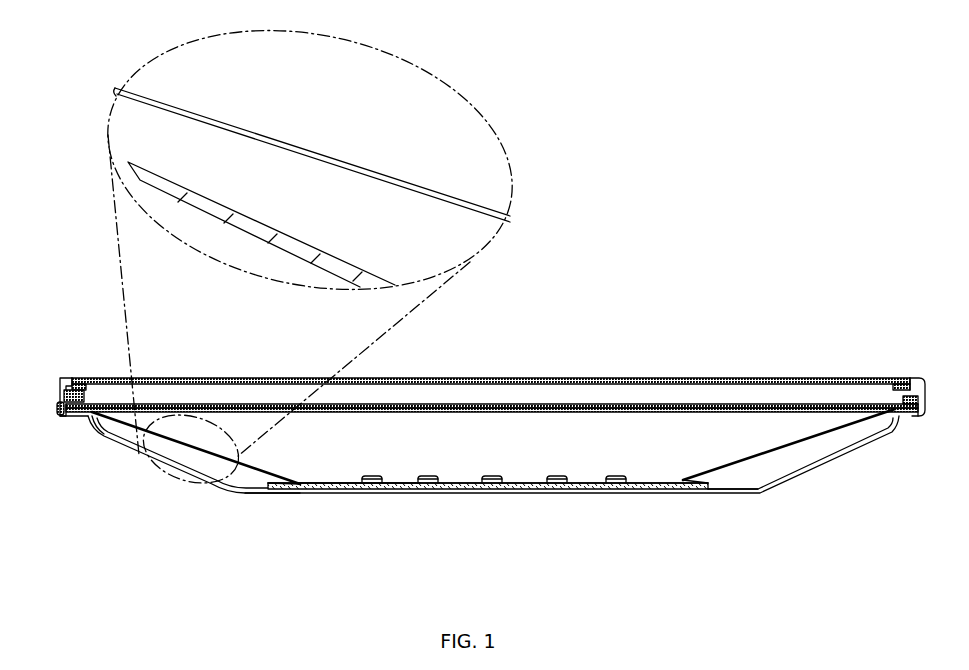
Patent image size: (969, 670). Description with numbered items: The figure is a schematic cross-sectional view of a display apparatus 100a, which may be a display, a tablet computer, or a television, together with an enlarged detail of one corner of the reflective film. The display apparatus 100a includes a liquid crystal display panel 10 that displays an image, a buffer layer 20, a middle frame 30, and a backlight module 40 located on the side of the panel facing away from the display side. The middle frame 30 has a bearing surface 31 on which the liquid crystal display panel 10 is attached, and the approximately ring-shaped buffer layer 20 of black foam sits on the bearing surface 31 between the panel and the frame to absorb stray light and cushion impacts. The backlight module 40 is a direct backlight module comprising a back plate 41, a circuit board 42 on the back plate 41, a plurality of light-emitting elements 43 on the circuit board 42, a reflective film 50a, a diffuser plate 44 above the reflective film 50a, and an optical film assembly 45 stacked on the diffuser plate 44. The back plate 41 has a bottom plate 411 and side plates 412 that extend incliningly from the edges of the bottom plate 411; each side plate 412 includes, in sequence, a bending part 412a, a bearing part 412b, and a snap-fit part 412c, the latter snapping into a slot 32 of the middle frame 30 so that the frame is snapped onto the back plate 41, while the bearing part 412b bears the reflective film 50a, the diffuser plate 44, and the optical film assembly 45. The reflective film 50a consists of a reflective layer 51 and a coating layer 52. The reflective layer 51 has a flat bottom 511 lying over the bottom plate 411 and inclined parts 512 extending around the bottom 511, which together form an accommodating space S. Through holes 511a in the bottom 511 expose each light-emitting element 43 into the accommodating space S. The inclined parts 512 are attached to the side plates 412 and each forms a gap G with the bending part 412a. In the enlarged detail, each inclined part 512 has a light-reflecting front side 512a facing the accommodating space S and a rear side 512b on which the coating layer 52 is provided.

The display apparatus 100a is at (547, 30).
The liquid crystal display panel 10 is at (114, 378).
The buffer layer 20 is at (88, 378).
The middle frame 30 is at (63, 393).
The bearing surface 31 is at (72, 380).
The slot 32 is at (60, 401).
The backlight module 40 is at (862, 448).
The back plate 41 is at (278, 546).
The bottom plate 411 is at (272, 490).
The side plate 412 is at (200, 497).
The bending part 412a is at (143, 455).
The bearing part 412b is at (88, 418).
The snap-fit part 412c is at (58, 415).
The circuit board 42 is at (333, 489).
The light-emitting element 43 is at (428, 484).
The diffuser plate 44 is at (448, 405).
The optical film assembly 45 is at (482, 412).
The reflective film 50a is at (730, 187).
The reflective layer 51 is at (683, 227).
The bottom 511 is at (522, 480).
The through hole 511a is at (380, 483).
The inclined part 512 is at (613, 200).
The front side 512a is at (503, 223).
The rear side 512b is at (497, 213).
The coating layer 52 is at (443, 198).
The gap G is at (277, 486).
The accommodating space S is at (724, 418).